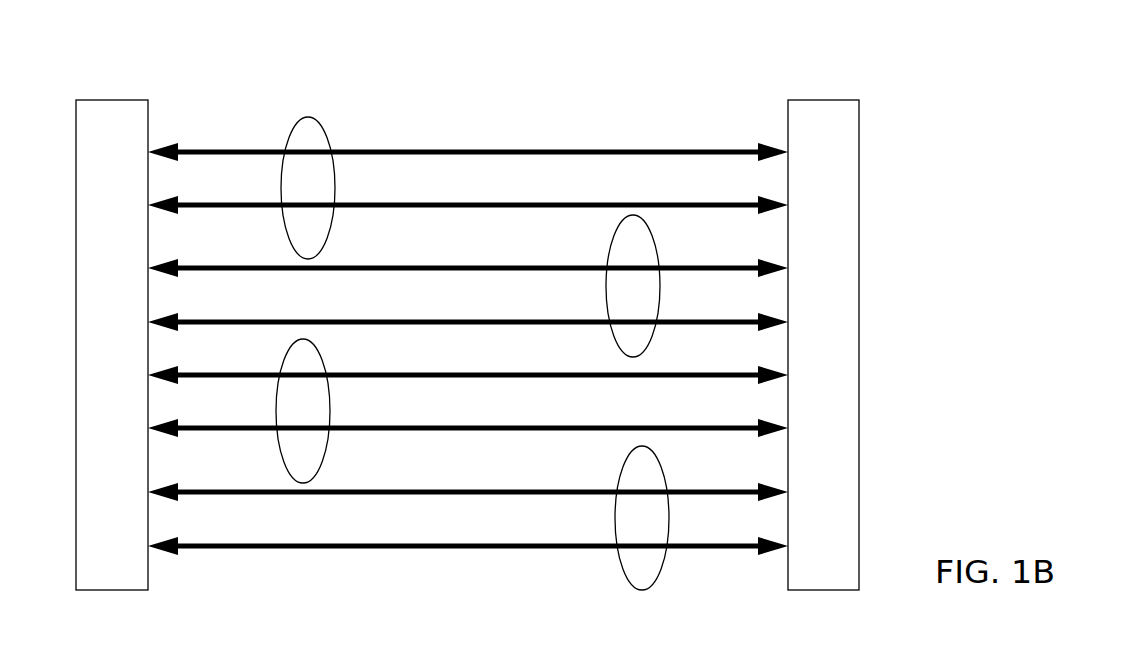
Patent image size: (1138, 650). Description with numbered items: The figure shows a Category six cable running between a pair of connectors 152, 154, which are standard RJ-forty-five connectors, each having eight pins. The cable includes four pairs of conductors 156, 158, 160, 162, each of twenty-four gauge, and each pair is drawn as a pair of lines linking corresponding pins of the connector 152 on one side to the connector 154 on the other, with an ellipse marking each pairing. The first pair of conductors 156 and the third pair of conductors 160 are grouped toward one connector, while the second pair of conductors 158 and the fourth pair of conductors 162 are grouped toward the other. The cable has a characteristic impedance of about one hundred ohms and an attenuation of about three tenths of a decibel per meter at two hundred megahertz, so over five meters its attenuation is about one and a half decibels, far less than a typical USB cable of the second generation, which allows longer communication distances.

The connector 152 is at (89, 126).
The connector 154 is at (801, 126).
The pair of conductors 156 is at (327, 135).
The pair of conductors 158 is at (658, 258).
The pair of conductors 160 is at (325, 368).
The pair of conductors 162 is at (662, 478).